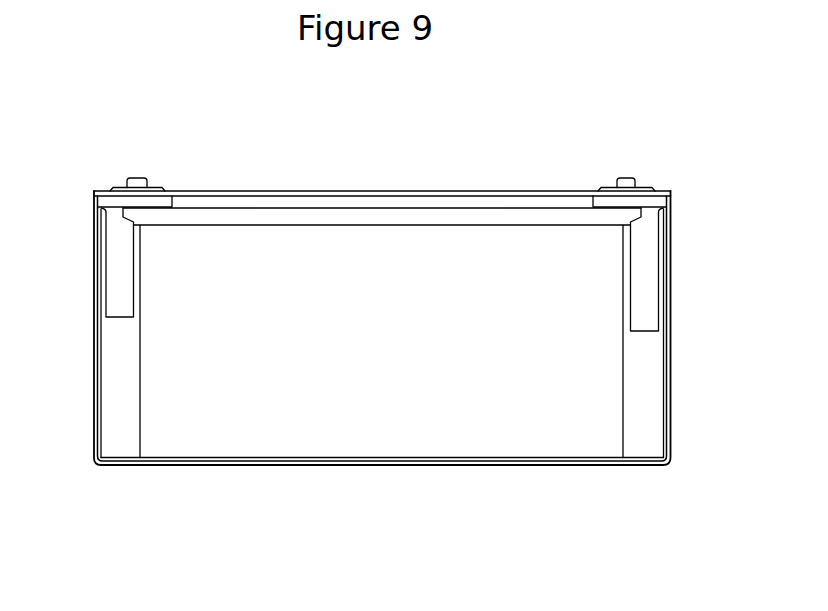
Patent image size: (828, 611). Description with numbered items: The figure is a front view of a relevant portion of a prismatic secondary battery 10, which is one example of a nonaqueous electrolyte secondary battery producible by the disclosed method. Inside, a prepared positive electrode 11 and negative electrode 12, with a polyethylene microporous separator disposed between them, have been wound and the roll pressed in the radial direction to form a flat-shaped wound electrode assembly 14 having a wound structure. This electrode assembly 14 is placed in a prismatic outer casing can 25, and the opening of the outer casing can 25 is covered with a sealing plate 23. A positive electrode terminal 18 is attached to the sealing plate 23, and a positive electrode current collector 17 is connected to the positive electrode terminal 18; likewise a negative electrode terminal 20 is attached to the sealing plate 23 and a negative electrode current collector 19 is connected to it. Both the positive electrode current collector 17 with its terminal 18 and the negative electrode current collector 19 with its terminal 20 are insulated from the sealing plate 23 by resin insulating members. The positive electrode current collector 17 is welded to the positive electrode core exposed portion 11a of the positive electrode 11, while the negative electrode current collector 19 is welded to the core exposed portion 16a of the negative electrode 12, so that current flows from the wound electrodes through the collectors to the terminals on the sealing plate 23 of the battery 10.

The prismatic secondary battery 10 is at (411, 171).
The positive electrode 11 is at (645, 365).
The positive electrode core exposed portion 11a is at (647, 445).
The negative electrode 12 is at (112, 373).
The flat-shaped wound electrode assembly 14 is at (389, 447).
The core exposed portion 16a is at (113, 445).
The positive electrode current collector 17 is at (648, 260).
The positive electrode terminal 18 is at (626, 177).
The negative electrode current collector 19 is at (115, 275).
The negative electrode terminal 20 is at (134, 178).
The sealing plate 23 is at (282, 190).
The prismatic outer casing can 25 is at (96, 328).